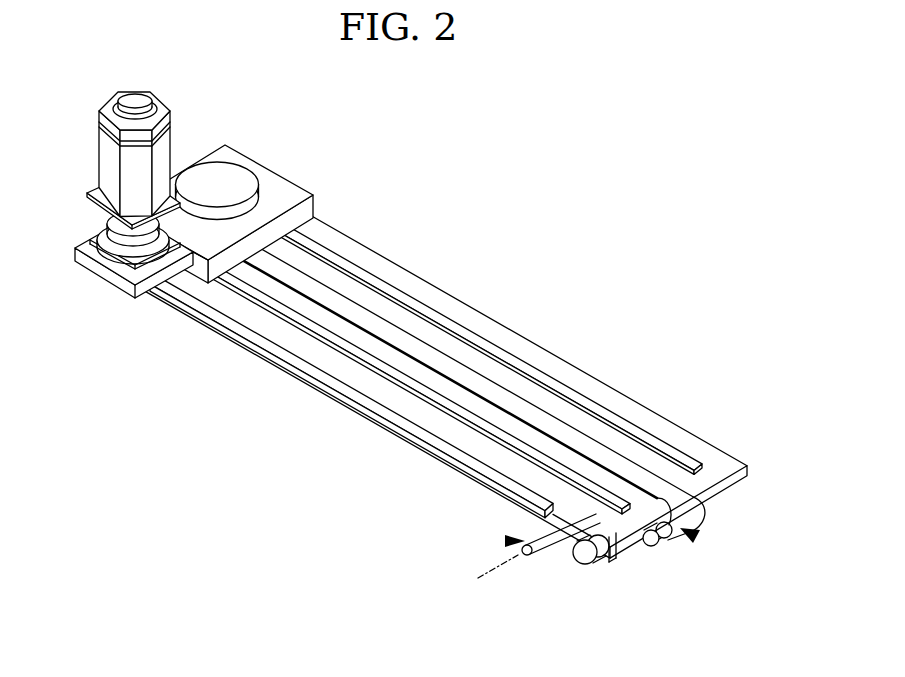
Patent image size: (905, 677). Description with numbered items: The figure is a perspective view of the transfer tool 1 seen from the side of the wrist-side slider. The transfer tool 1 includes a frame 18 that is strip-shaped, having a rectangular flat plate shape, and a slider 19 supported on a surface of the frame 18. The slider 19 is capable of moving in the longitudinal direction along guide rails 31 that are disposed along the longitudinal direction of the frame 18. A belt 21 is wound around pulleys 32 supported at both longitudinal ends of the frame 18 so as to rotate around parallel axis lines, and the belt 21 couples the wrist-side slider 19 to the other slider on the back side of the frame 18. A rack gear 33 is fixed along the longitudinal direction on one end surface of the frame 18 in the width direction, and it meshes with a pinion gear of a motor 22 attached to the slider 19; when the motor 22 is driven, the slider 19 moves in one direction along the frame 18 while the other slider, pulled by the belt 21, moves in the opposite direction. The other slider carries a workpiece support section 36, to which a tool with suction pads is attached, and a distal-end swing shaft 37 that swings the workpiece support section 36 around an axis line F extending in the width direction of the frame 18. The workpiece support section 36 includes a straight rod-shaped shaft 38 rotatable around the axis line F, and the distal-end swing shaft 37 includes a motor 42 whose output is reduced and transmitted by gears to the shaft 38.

The transfer tool 1 is at (497, 170).
The frame 18 is at (497, 330).
The slider 19 is at (275, 193).
The belt 21 is at (635, 477).
The motor 22 is at (106, 160).
The guide rails 31 is at (380, 280).
The pulleys 32 is at (670, 532).
The rack gear 33 is at (293, 372).
The workpiece support section 36 is at (506, 541).
The distal-end swing shaft 37 is at (700, 537).
The shaft 38 is at (537, 558).
The motor 42 is at (583, 565).
The axis line F is at (487, 572).